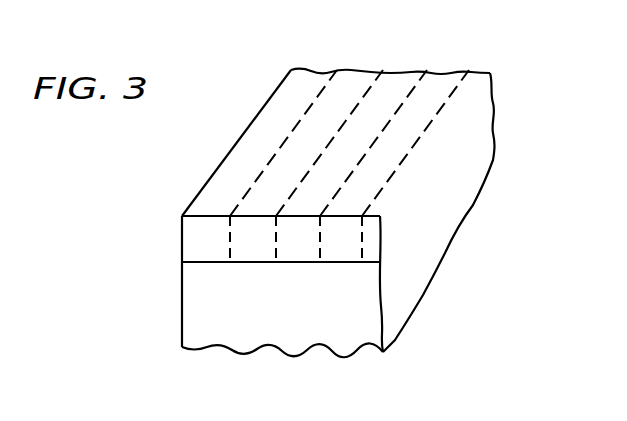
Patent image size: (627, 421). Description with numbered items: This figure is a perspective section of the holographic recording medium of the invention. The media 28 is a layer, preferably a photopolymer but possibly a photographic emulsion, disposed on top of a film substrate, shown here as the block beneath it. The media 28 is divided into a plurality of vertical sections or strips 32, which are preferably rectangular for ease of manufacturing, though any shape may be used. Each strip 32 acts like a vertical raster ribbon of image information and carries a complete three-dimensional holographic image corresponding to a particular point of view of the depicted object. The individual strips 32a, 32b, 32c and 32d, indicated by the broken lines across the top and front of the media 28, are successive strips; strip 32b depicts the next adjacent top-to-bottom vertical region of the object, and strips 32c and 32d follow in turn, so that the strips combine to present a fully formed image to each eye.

The media 28 is at (182, 239).
The vertical section or strip 32 is at (373, 271).
The strip 32a is at (248, 150).
The strip 32b is at (344, 97).
The strip 32c is at (397, 86).
The strip 32d is at (448, 82).